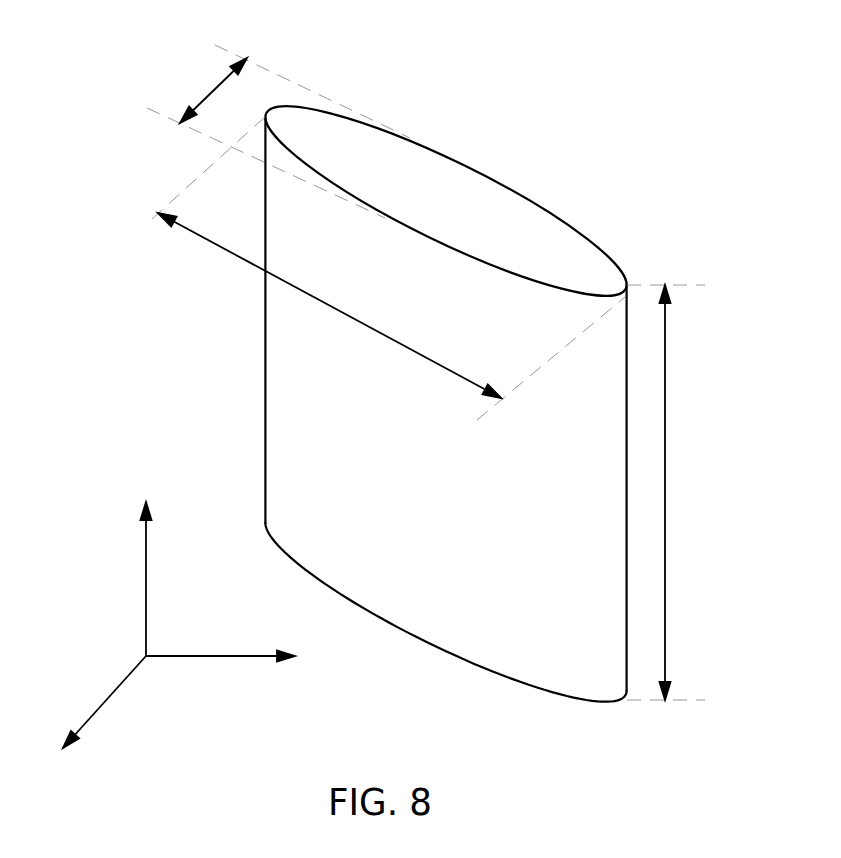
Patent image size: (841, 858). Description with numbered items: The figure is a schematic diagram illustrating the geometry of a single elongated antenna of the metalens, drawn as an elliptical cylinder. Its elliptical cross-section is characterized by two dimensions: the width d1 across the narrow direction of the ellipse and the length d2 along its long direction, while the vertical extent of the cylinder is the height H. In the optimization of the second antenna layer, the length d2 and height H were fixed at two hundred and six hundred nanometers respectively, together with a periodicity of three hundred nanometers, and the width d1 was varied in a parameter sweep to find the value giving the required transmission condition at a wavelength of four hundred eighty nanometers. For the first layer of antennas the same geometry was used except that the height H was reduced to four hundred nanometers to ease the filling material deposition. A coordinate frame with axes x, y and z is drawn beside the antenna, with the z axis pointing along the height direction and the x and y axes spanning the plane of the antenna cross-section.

The width d1 is at (210, 85).
The length d2 is at (300, 290).
The height H is at (667, 487).
The x axis x is at (88, 711).
The y axis y is at (245, 657).
The z axis z is at (146, 553).